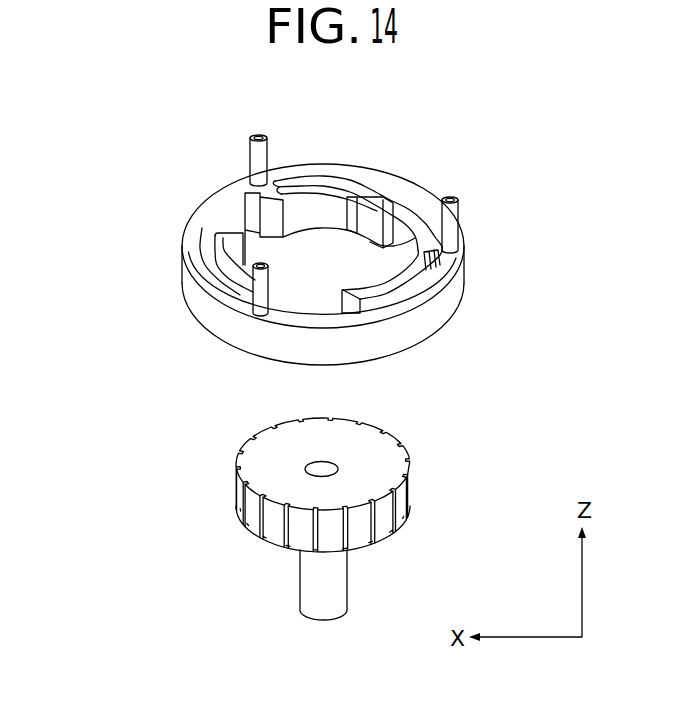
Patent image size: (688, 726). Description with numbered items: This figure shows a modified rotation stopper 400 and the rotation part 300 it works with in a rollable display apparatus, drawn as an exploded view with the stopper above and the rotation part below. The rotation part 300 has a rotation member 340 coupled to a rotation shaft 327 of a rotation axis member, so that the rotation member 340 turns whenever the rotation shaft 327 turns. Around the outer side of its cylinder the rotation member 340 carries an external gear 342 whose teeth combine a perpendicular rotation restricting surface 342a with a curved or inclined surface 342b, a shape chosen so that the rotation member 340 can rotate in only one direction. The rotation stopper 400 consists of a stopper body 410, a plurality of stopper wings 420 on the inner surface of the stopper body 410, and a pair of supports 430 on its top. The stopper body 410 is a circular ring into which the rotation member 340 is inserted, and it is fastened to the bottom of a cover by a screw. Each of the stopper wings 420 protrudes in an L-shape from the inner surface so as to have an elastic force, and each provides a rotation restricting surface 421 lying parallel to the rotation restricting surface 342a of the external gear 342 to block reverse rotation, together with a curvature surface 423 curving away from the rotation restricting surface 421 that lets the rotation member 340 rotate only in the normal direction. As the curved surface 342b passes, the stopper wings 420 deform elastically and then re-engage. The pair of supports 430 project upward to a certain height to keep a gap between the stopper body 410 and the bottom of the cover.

The rotation part 300 is at (198, 520).
The rotation shaft 327 is at (312, 590).
The rotation member 340 is at (262, 467).
The external gear 342 is at (563, 400).
The rotation restricting surface 342a is at (407, 460).
The curved surface 342b is at (410, 478).
The rotation stopper 400 is at (492, 240).
The stopper body 410 is at (197, 302).
The stopper wings 420 is at (100, 173).
The rotation restricting surface 421 is at (228, 220).
The curvature surface 423 is at (215, 256).
The supports 430 is at (250, 153).